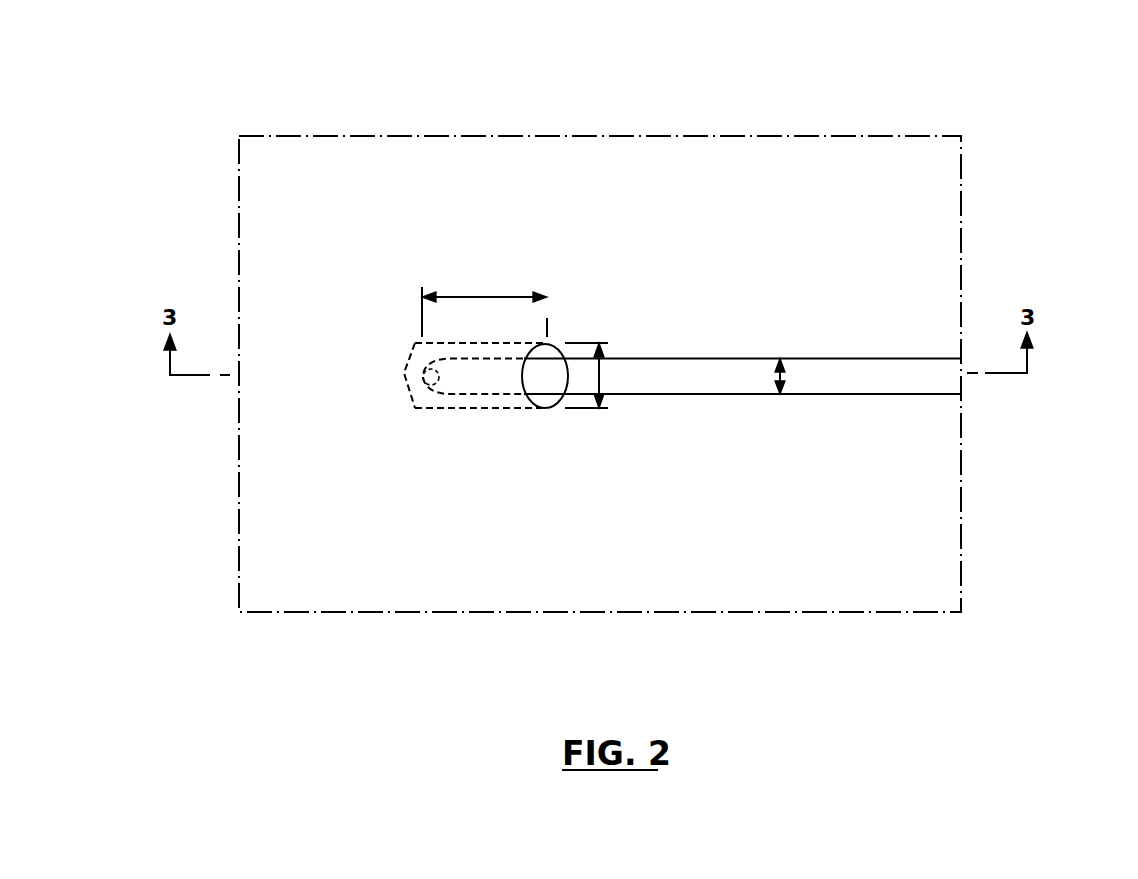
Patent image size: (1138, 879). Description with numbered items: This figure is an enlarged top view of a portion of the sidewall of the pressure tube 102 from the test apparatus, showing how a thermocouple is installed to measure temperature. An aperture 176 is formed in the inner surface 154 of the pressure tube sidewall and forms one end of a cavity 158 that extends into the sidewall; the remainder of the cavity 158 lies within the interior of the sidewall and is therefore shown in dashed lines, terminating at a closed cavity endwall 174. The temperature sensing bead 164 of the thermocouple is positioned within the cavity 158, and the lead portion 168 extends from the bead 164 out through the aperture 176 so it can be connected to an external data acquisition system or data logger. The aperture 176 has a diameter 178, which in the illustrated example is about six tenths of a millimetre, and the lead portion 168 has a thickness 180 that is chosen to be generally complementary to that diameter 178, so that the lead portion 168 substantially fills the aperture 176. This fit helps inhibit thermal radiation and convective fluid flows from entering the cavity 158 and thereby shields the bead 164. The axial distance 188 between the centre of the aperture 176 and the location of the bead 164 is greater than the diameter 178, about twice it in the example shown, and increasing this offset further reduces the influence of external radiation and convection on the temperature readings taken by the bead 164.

The pressure tube 102 is at (985, 160).
The inner surface 154 is at (913, 243).
The cavity 158 is at (436, 428).
The temperature sensing bead 164 is at (410, 364).
The lead portion 168 is at (727, 380).
The cavity endwall 174 is at (404, 373).
The aperture 176 is at (549, 410).
The diameter 178 is at (600, 370).
The thickness 180 is at (784, 376).
The axial distance 188 is at (488, 296).